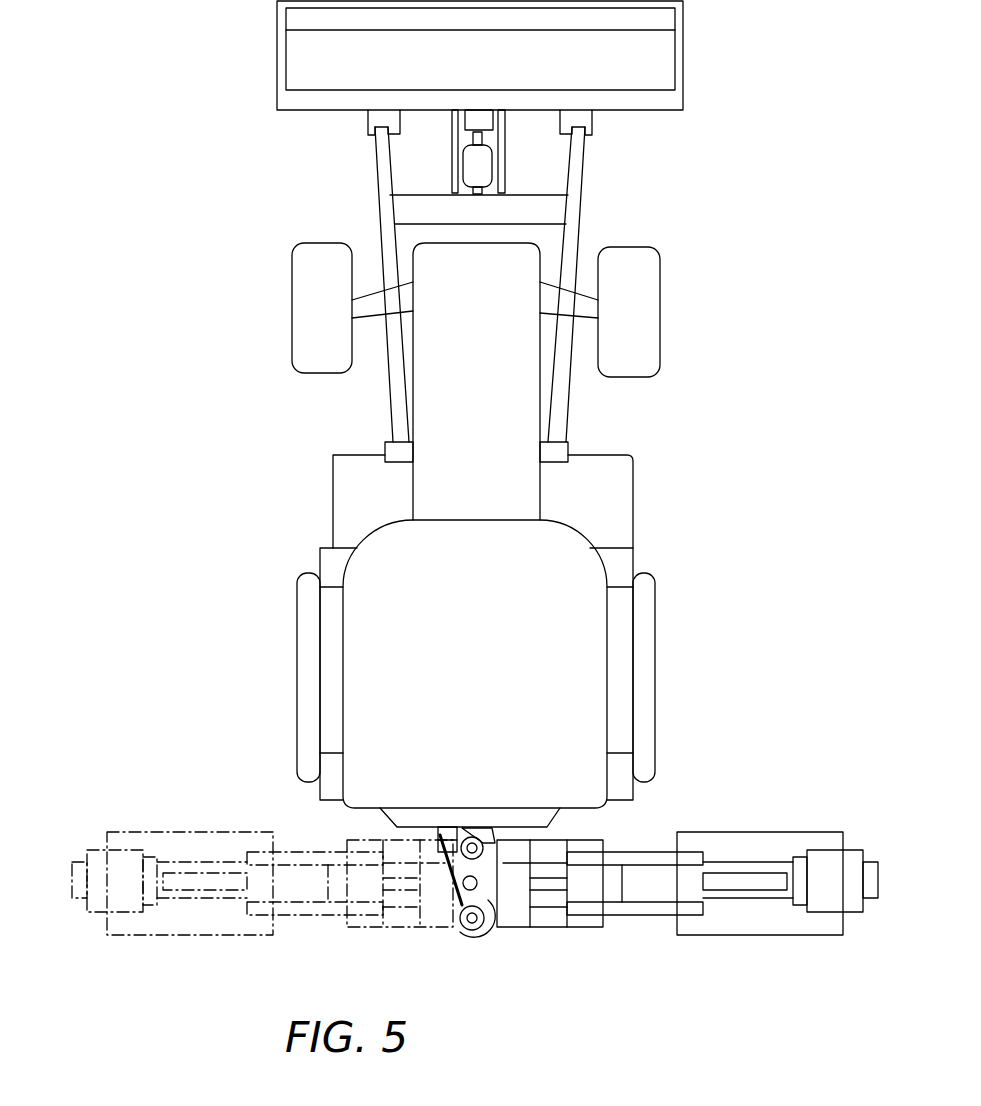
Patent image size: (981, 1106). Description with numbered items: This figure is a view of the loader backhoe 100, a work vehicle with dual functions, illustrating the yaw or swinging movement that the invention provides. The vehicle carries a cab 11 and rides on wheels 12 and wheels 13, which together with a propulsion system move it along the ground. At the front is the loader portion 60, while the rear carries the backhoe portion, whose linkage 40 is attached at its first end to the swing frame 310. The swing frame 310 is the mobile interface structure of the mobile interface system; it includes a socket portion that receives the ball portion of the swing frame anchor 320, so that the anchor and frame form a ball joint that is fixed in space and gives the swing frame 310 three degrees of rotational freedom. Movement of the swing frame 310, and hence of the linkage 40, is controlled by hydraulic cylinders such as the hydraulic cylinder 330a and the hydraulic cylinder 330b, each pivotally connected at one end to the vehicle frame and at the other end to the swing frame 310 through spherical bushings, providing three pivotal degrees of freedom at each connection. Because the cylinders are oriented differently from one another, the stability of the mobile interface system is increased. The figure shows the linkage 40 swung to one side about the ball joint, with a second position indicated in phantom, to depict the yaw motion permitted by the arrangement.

The loader backhoe 100 is at (653, 402).
The cab 11 is at (465, 557).
The wheels 12 is at (300, 597).
The wheels 13 is at (312, 247).
The loader portion 60 is at (355, 188).
The linkage 40 is at (790, 818).
The swing frame 310 is at (500, 905).
The swing frame anchor 320 is at (470, 827).
The hydraulic cylinder 330a is at (518, 833).
The hydraulic cylinder 330b is at (427, 833).